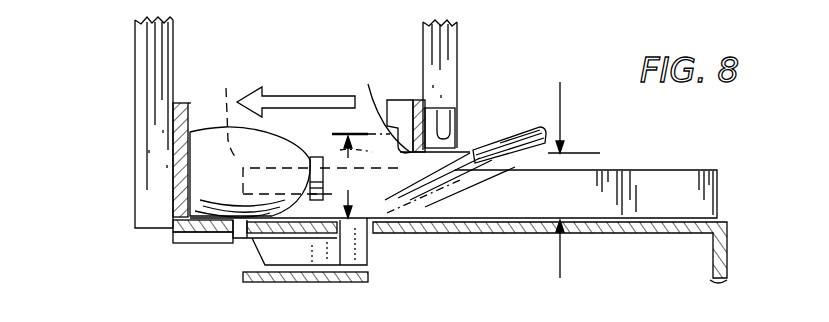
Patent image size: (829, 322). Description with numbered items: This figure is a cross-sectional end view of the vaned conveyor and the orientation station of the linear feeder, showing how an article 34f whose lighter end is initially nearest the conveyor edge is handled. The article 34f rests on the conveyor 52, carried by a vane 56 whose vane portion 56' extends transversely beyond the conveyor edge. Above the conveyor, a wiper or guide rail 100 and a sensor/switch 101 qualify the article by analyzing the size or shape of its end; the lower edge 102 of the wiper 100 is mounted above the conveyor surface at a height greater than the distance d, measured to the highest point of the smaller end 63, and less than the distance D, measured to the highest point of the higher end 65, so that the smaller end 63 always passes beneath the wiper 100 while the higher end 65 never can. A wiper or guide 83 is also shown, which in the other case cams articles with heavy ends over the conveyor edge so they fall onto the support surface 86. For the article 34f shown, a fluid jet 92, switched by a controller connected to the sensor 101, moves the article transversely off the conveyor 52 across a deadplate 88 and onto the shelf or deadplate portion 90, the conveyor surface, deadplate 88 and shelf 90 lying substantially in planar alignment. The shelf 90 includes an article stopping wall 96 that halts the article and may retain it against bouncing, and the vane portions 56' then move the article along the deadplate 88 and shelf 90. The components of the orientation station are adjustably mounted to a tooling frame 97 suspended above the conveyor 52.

The article 34f is at (203, 178).
The conveyor 52 is at (722, 224).
The vane 56 is at (476, 183).
The vane portion 56' is at (230, 109).
The smaller end 63 is at (452, 190).
The higher end 65 is at (313, 157).
The wiper or guide 83 is at (400, 107).
The support surface 86 is at (360, 268).
The deadplate 88 is at (248, 232).
The shelf or deadplate portion 90 is at (192, 235).
The fluid jet 92 is at (528, 130).
The article stopping wall 96 is at (190, 115).
The tooling frame 97 is at (147, 70).
The wiper or guide rail 100 is at (422, 108).
The sensor/switch 101 is at (447, 125).
The lower edge 102 is at (367, 107).
The distance D is at (361, 176).
The distance d is at (574, 180).